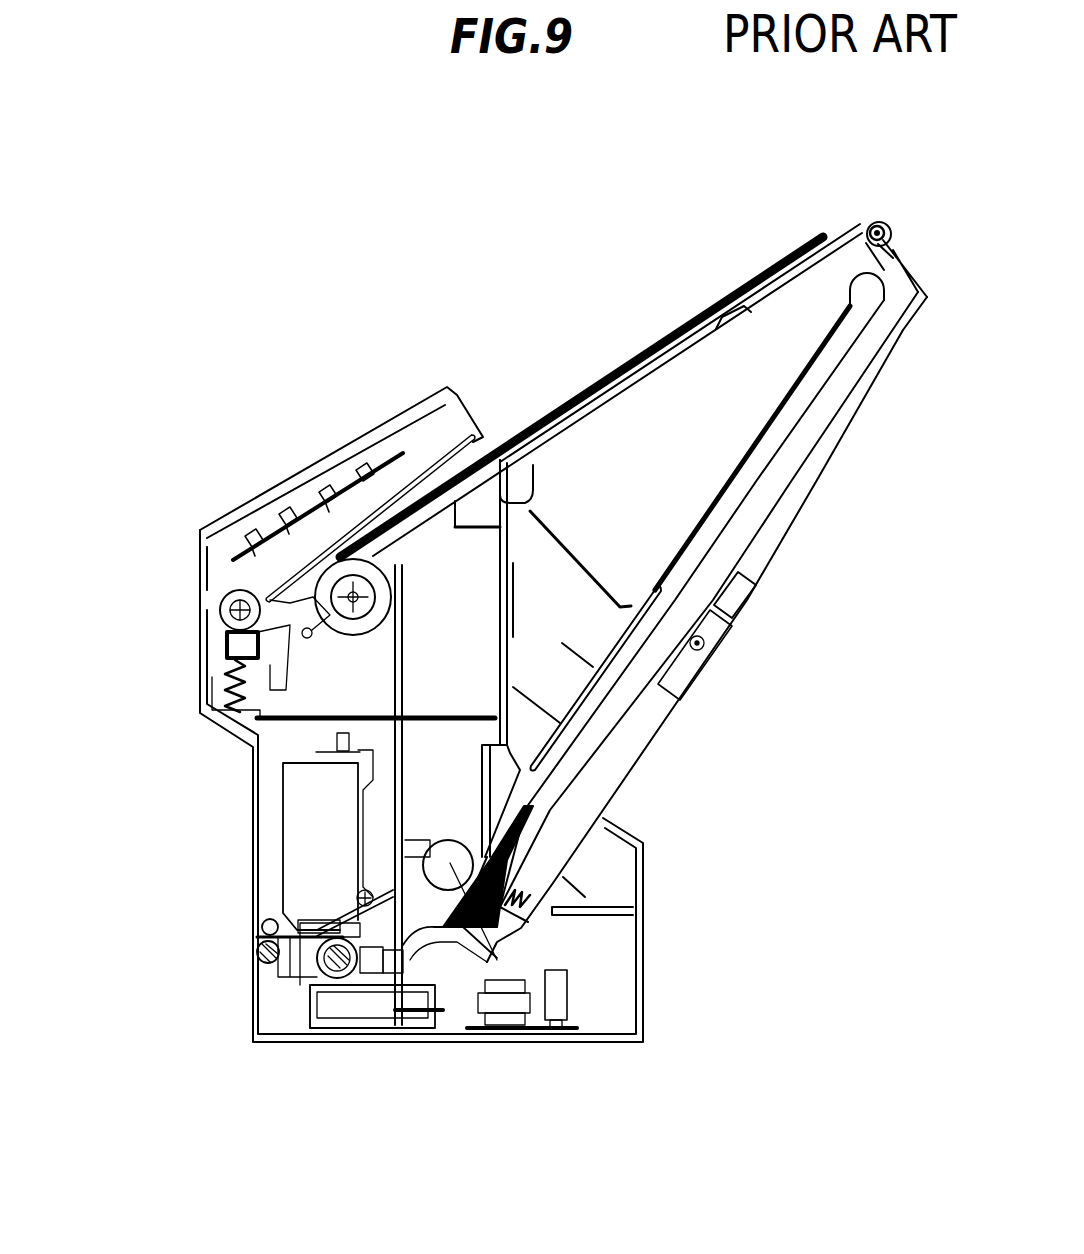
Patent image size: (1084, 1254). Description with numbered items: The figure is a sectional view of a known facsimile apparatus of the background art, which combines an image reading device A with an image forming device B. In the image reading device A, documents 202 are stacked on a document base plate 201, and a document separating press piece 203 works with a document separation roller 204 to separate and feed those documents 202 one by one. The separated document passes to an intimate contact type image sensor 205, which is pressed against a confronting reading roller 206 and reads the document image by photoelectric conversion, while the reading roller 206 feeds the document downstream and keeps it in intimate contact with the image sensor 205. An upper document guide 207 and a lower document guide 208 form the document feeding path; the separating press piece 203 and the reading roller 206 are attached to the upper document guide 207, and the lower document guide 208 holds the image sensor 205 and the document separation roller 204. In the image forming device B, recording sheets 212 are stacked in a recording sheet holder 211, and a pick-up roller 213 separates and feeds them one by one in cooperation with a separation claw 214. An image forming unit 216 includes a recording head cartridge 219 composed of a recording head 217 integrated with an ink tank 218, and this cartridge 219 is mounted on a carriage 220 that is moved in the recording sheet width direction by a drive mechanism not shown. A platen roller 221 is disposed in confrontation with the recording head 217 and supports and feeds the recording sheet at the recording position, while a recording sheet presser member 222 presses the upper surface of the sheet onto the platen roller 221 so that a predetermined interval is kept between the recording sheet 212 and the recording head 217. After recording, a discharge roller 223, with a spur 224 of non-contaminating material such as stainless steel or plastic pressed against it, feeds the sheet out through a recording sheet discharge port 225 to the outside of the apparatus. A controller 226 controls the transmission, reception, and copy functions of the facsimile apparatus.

The document base plate 201 is at (622, 393).
The documents 202 is at (562, 408).
The document separating press piece 203 is at (285, 580).
The document separation roller 204 is at (355, 580).
The intimate contact type image sensor 205 is at (227, 660).
The reading roller 206 is at (213, 607).
The upper document guide 207 is at (280, 567).
The lower document guide 208 is at (430, 505).
The recording sheet holder 211 is at (766, 530).
The recording sheets 212 is at (645, 655).
The pick-up roller 213 is at (485, 930).
The separation claw 214 is at (420, 957).
The image forming unit 216 is at (307, 948).
The recording head 217 is at (315, 940).
The ink tank 218 is at (312, 843).
The recording head cartridge 219 is at (322, 823).
The carriage 220 is at (358, 797).
The platen roller 221 is at (338, 977).
The recording sheet presser member 222 is at (378, 945).
The discharge roller 223 is at (250, 963).
The spur 224 is at (258, 928).
The recording sheet discharge port 225 is at (247, 950).
The controller 226 is at (563, 1000).
The image reading device A is at (220, 580).
The image forming device B is at (315, 893).